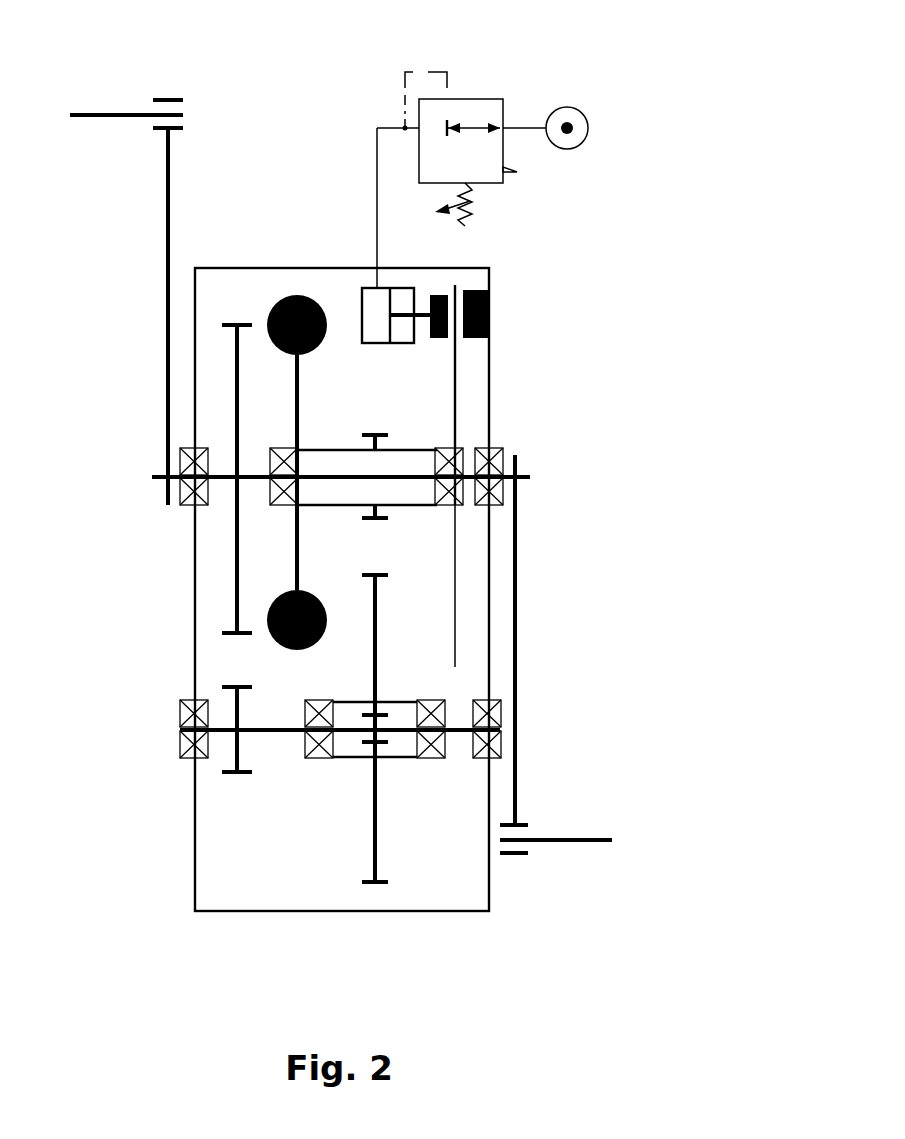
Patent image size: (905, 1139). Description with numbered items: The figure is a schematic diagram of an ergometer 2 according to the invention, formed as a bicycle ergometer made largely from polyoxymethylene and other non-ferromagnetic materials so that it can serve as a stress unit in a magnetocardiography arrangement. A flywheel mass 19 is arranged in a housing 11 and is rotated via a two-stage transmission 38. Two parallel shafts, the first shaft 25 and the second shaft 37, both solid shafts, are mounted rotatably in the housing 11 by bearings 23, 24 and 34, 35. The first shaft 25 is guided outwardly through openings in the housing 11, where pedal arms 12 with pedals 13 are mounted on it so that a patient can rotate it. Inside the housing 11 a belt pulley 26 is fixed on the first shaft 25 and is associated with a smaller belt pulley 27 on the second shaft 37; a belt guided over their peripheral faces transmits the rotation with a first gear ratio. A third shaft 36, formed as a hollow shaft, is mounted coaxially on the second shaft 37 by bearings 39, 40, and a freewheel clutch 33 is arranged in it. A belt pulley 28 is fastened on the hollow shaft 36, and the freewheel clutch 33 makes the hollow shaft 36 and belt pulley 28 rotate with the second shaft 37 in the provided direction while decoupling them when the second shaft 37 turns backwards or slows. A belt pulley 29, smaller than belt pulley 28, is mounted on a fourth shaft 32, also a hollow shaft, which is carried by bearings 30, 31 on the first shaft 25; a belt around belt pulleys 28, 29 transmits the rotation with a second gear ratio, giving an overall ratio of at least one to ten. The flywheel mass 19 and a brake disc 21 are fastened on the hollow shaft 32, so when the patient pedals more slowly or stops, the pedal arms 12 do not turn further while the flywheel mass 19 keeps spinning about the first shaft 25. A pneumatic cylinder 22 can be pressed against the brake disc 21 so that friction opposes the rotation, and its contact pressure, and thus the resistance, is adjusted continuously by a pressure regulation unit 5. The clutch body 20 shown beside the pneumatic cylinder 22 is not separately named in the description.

The ergometer 2 is at (255, 84).
The pressure regulation unit 5 is at (520, 85).
The housing 11 is at (265, 268).
The pedal arms 12 is at (165, 282).
The pedals 13 is at (127, 115).
The flywheel mass 19 is at (298, 297).
The shifting clutch 20 is at (478, 280).
The brake disc 21 is at (455, 377).
The pneumatic cylinder 22 is at (378, 322).
The bearing 23 is at (185, 502).
The bearing 24 is at (500, 455).
The first shaft 25 is at (223, 482).
The belt pulley 26 is at (233, 358).
The belt pulley 27 is at (233, 757).
The belt pulley 28 is at (380, 848).
The belt pulley 29 is at (378, 513).
The bearing 30 is at (450, 452).
The bearing 31 is at (293, 457).
The fourth shaft 32 is at (400, 455).
The freewheel clutch 33 is at (395, 745).
The bearing 34 is at (490, 705).
The bearing 35 is at (185, 712).
The third shaft 36 is at (405, 700).
The second shaft 37 is at (283, 730).
The two-stage transmission 38 is at (247, 870).
The bearing 39 is at (423, 740).
The bearing 40 is at (312, 757).